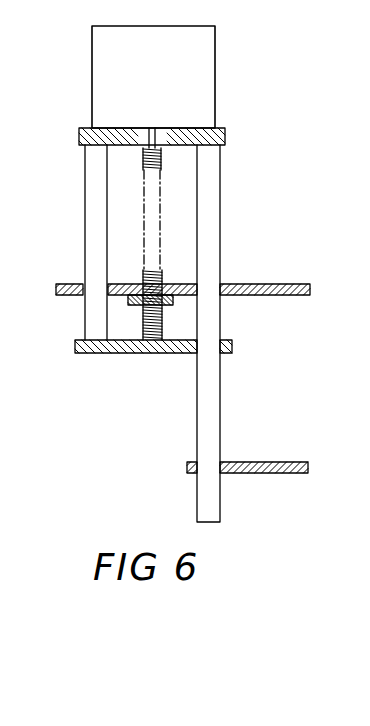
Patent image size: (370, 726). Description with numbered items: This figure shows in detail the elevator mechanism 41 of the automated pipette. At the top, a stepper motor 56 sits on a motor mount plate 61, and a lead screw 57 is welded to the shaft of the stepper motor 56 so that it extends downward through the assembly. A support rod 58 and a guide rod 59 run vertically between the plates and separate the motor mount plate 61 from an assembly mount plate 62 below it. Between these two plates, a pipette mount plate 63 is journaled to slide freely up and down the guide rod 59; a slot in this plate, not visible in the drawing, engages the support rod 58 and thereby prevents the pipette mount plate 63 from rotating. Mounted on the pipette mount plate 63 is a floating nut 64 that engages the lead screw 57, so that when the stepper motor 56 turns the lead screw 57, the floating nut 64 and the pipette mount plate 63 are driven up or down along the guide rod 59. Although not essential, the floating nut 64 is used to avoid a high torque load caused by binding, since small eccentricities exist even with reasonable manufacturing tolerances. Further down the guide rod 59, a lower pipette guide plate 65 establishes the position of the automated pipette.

The elevator mechanism 41 is at (83, 411).
The stepper motor 56 is at (92, 73).
The lead screw 57 is at (144, 218).
The support rod 58 is at (85, 229).
The guide rod 59 is at (220, 229).
The motor mount plate 61 is at (79, 137).
The assembly mount plate 62 is at (132, 354).
The pipette mount plate 63 is at (65, 283).
The floating nut 64 is at (128, 301).
The lower pipette guide plate 65 is at (268, 462).